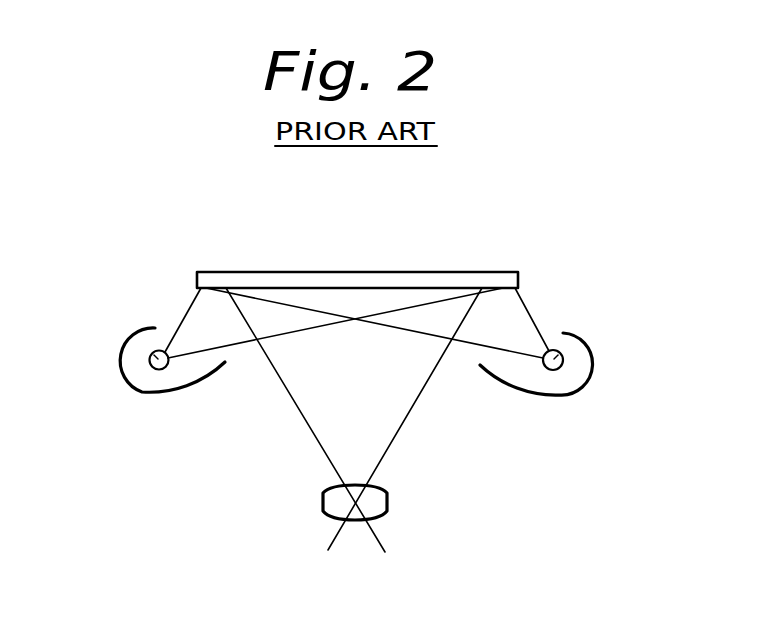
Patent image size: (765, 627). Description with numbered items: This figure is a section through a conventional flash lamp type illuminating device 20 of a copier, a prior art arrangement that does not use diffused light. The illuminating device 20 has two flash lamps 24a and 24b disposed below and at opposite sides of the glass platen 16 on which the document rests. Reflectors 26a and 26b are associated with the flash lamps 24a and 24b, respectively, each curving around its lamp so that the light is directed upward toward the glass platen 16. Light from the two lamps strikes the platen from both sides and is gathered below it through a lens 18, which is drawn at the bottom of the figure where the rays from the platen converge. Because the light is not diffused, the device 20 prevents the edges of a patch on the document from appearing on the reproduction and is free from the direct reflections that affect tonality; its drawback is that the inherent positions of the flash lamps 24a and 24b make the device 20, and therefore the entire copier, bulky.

The glass platen 16 is at (475, 273).
The lens 18 is at (388, 502).
The illuminating device 20 is at (546, 225).
The flash lamp 24a is at (151, 354).
The flash lamp 24b is at (578, 348).
The reflector 26a is at (116, 372).
The reflector 26b is at (593, 383).